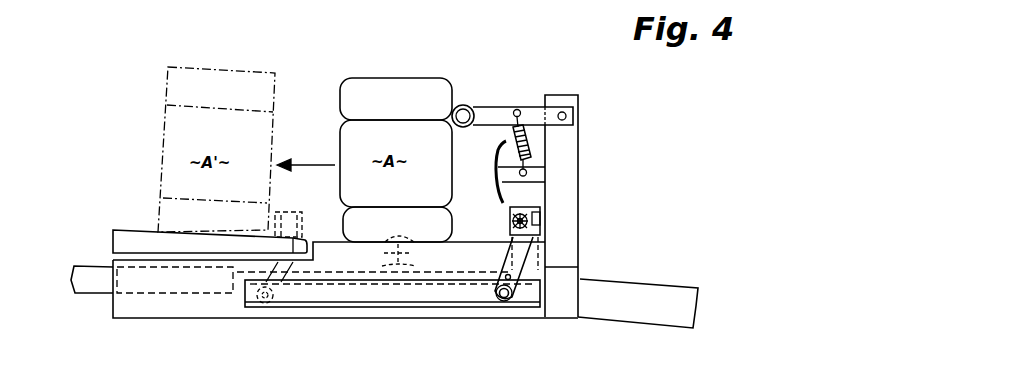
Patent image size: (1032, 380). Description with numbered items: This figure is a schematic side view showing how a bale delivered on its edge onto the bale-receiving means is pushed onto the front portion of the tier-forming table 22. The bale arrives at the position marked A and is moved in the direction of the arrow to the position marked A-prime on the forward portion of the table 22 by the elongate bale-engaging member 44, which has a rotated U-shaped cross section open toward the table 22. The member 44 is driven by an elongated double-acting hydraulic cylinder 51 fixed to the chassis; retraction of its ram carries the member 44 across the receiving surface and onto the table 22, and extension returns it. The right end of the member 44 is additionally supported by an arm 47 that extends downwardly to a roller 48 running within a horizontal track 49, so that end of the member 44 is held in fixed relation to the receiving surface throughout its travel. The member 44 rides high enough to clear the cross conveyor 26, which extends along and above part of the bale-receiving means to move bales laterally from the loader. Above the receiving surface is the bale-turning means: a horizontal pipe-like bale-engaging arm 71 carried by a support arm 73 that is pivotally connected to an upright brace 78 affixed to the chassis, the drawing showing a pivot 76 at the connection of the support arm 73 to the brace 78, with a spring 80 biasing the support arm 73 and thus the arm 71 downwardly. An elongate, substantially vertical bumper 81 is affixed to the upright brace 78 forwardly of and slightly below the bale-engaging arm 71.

The tier-forming table 22 is at (137, 230).
The double-acting hydraulic cylinder 51 is at (90, 267).
The cross conveyor 26 is at (374, 249).
The horizontal track 49 is at (433, 298).
The upright brace 78 is at (582, 171).
The support arm 73 is at (499, 108).
The bale-engaging arm 71 is at (465, 104).
The pivot pin 76 is at (566, 115).
The spring 80 is at (513, 134).
The bumper 81 is at (497, 173).
The bale-engaging member 44 is at (540, 217).
The roller 48 is at (490, 300).
The arm 47 is at (518, 287).